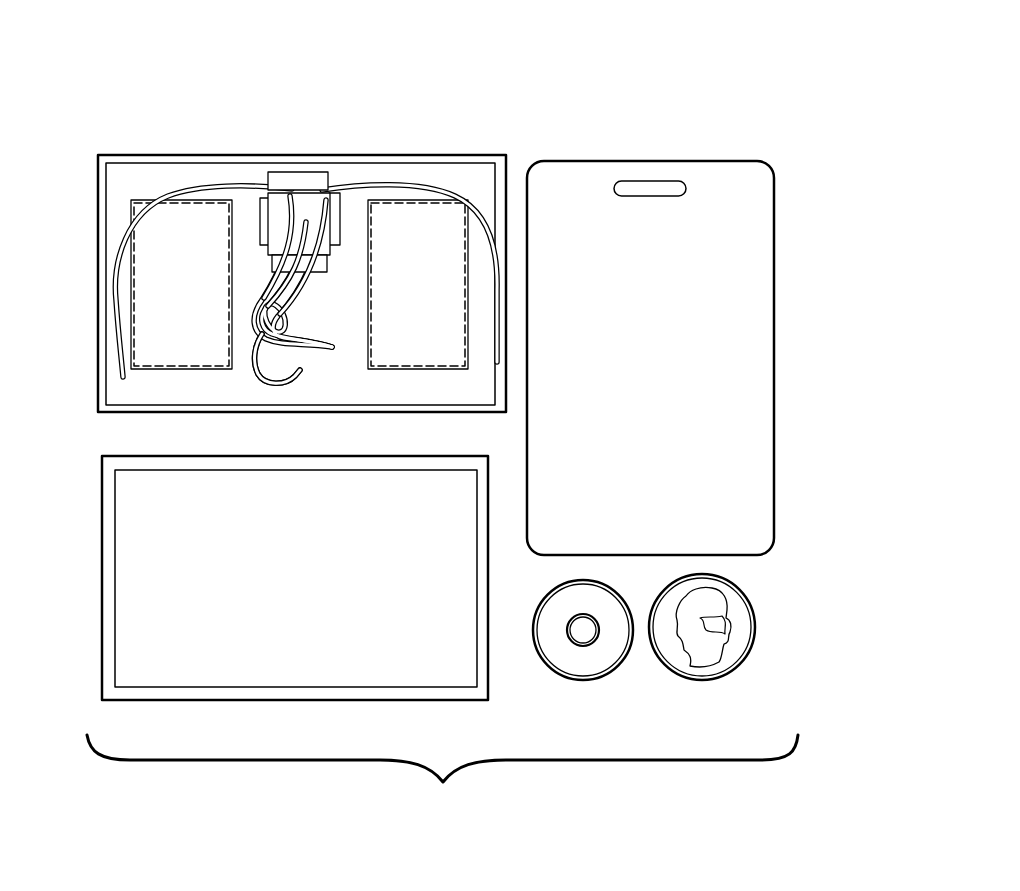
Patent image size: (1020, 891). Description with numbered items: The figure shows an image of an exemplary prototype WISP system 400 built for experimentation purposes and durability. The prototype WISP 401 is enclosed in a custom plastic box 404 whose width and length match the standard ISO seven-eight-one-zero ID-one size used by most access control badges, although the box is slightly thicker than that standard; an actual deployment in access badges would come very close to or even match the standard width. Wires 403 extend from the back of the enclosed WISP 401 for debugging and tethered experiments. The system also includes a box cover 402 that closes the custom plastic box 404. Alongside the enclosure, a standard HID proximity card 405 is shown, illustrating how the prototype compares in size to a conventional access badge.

The prototype WISP system 400 is at (694, 80).
The prototype WISP 401 is at (300, 190).
The box cover 402 is at (102, 558).
The wires 403 is at (254, 372).
The custom plastic box 404 is at (98, 302).
The standard HID proximity card 405 is at (774, 252).